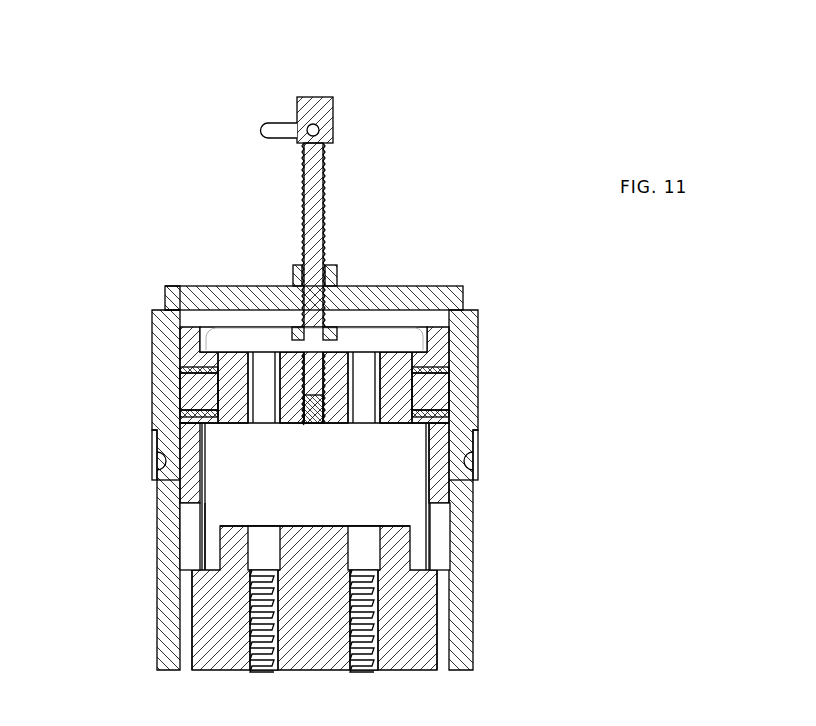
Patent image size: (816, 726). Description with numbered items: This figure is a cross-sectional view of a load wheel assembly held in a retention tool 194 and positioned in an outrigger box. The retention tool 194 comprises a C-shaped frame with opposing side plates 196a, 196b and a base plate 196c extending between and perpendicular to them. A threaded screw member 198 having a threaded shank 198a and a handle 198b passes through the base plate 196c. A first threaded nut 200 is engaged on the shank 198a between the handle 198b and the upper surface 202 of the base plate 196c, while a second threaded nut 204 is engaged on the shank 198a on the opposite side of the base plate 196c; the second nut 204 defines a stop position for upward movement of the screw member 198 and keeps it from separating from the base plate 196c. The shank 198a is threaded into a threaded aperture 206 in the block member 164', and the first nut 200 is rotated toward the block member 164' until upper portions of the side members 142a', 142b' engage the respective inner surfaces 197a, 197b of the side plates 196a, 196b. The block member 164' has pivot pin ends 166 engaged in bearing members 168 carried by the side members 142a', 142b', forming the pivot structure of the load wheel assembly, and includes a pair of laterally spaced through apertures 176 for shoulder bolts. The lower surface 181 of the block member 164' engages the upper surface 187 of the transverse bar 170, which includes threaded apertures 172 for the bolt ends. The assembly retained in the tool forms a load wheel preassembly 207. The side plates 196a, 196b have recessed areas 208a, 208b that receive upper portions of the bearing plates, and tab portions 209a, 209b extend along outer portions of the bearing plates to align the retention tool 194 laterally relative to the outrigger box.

The retention tool 194 is at (466, 303).
The transverse bar 170 is at (222, 673).
The threaded apertures 172 is at (258, 670).
The pivot pin ends 166 is at (205, 432).
The upper surface 187 is at (196, 540).
The upper surface 202 is at (437, 285).
The first threaded nut 200 is at (293, 271).
The threaded screw member 198 is at (337, 100).
The threaded shank 198a is at (326, 165).
The handle 198b is at (278, 124).
The side member 142a' is at (173, 372).
The side member 142b' is at (390, 375).
The inner surface 197a is at (190, 390).
The inner surface 197b is at (440, 383).
The side plate 196a is at (200, 414).
The side plate 196b is at (480, 393).
The base plate 196c is at (167, 300).
The load wheel preassembly 207 is at (173, 320).
The through apertures 176 is at (362, 370).
The second threaded nut 204 is at (297, 328).
The threaded aperture 206 is at (320, 425).
The lower surface 181 is at (292, 425).
The block member 164' is at (315, 478).
The bearing members 168 is at (153, 437).
The tab portion 209a is at (152, 457).
The tab portion 209b is at (466, 455).
The recessed area 208a is at (162, 488).
The recessed area 208b is at (468, 480).